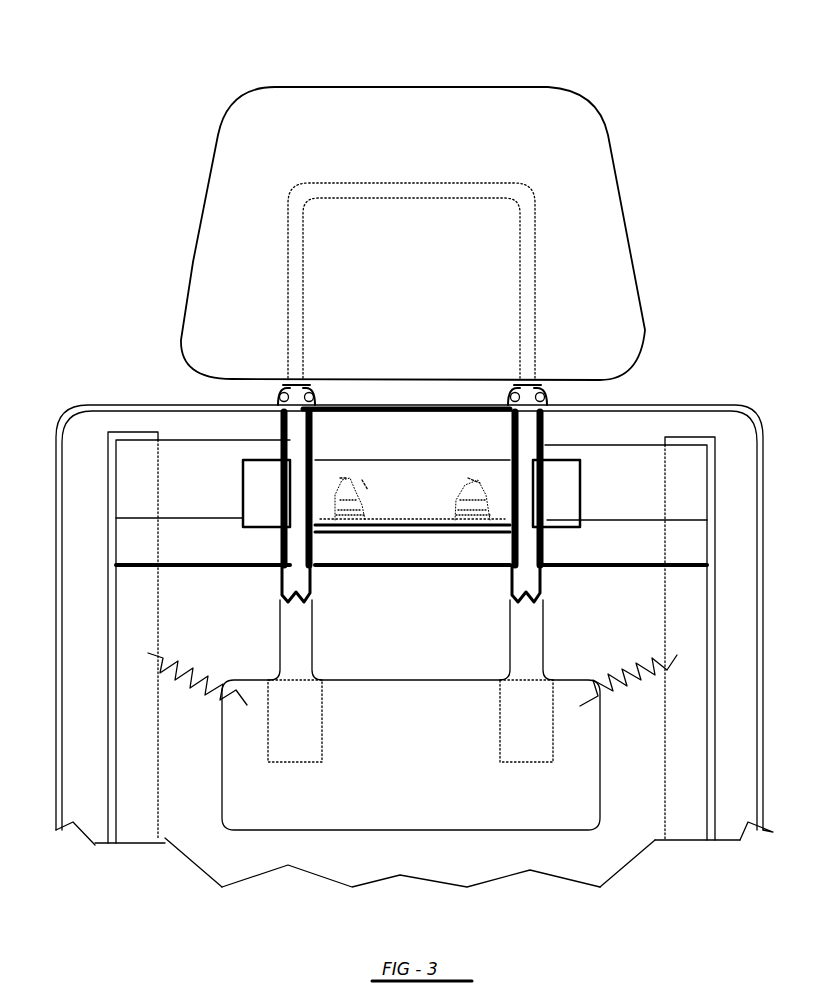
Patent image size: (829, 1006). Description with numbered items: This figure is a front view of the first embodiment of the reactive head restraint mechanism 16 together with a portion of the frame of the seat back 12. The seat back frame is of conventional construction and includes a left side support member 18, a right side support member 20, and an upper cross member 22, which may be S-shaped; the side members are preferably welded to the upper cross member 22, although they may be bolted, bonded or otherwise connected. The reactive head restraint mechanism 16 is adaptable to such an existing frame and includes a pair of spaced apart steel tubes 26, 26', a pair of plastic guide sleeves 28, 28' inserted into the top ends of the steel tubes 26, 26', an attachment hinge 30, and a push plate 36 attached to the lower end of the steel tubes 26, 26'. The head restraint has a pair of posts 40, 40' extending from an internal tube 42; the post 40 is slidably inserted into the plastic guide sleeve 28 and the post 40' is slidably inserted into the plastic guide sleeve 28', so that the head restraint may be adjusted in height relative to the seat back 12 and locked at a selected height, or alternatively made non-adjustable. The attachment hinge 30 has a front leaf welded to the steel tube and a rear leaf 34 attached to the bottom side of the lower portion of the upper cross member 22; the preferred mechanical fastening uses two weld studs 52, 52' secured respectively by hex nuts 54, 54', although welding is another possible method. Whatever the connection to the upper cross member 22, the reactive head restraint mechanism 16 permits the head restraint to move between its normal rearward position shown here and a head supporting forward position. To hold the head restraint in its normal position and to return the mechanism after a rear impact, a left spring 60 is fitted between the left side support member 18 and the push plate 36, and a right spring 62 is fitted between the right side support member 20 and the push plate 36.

The seat back 12 is at (763, 622).
The reactive head restraint mechanism 16 is at (298, 638).
The left side support member 18 is at (137, 770).
The right side support member 20 is at (692, 775).
The upper cross member 22 is at (183, 497).
The steel tube 26 is at (249, 590).
The steel tube 26' is at (549, 596).
The plastic guide sleeve 28 is at (230, 463).
The plastic guide sleeve 28' is at (574, 488).
The attachment hinge 30 is at (262, 482).
The rear leaf 34 is at (352, 805).
The push plate 36 is at (605, 242).
The post 40 is at (259, 355).
The post 40' is at (556, 370).
The internal tube 42 is at (432, 186).
The weld stud 52 is at (365, 456).
The weld stud 52' is at (460, 452).
The hex nut 54 is at (373, 497).
The hex nut 54' is at (460, 497).
The left spring 60 is at (200, 685).
The right spring 62 is at (655, 668).